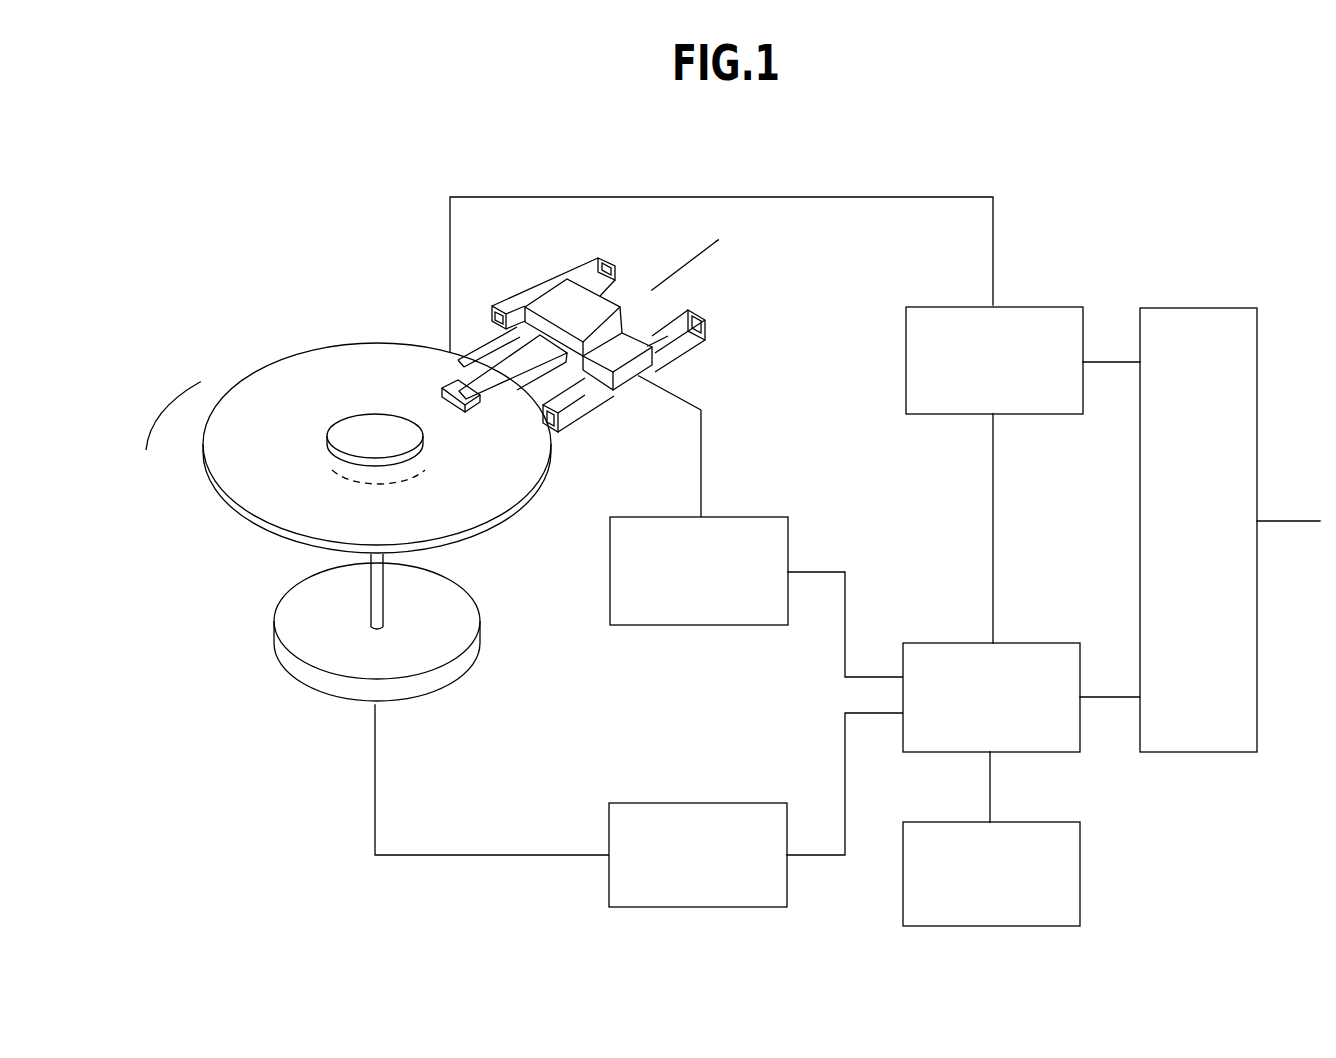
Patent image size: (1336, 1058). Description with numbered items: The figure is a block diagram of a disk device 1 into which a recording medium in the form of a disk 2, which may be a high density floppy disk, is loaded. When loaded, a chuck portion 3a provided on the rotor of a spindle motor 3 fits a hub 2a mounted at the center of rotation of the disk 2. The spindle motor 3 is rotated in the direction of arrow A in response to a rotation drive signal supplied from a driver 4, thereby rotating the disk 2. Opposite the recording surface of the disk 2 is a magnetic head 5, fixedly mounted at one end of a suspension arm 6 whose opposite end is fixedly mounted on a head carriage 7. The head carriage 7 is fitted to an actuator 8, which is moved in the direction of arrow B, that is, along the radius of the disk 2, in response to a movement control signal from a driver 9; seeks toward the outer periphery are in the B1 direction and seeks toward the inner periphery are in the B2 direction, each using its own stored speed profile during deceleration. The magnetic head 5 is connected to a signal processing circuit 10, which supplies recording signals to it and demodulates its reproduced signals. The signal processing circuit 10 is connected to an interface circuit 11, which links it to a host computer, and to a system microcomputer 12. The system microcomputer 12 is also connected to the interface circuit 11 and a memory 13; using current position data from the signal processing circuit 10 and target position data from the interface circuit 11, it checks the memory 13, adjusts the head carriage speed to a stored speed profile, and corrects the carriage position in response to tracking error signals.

The disk device 1 is at (374, 137).
The disk 2 is at (318, 386).
The hub 2a is at (340, 444).
The spindle motor 3 is at (290, 642).
The chuck portion 3a is at (425, 470).
The driver 4 is at (695, 803).
The magnetic head 5 is at (445, 384).
The suspension arm 6 is at (520, 380).
The head carriage 7 is at (566, 302).
The actuator 8 is at (690, 342).
The driver 9 is at (697, 625).
The signal processing circuit 10 is at (1042, 307).
The interface circuit 11 is at (1202, 308).
The system microcomputer 12 is at (1038, 643).
The memory 13 is at (1082, 876).
The arrow A is at (173, 414).
The arrow B is at (685, 259).
The B1 direction B1 is at (737, 241).
The B2 direction B2 is at (655, 320).